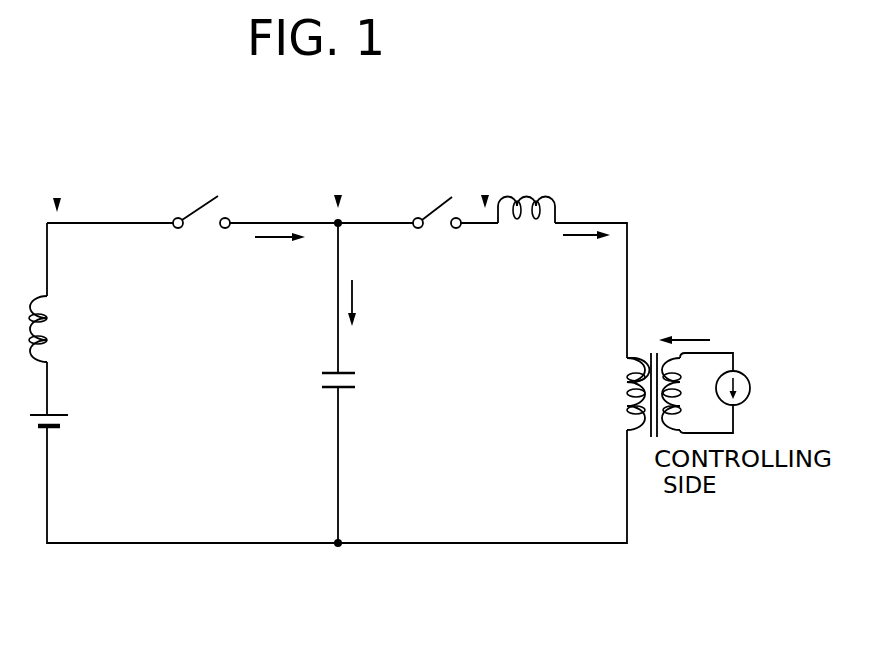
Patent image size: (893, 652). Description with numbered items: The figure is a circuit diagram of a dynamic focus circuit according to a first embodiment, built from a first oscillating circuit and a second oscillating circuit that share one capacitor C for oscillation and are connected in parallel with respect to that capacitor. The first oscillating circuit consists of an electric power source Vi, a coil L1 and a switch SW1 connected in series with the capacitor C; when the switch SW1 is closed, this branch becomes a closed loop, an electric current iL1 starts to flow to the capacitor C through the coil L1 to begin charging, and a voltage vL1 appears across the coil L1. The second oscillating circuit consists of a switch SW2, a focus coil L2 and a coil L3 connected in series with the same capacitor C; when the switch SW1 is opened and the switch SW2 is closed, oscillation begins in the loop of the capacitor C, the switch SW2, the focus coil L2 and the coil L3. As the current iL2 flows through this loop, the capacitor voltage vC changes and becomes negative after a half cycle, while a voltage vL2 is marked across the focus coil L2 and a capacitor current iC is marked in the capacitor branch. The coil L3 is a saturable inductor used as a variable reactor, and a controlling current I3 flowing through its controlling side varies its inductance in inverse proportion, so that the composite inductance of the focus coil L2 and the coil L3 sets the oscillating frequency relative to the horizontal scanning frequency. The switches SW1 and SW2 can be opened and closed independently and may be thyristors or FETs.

The coil L1 is at (58, 329).
The electric power source Vi is at (65, 422).
The switch SW1 is at (199, 232).
The switch SW2 is at (432, 232).
The capacitor C is at (351, 382).
The focus coil L2 is at (526, 226).
The coil L3 is at (668, 395).
The controlling current I3 is at (684, 322).
The electric current iL1 is at (280, 255).
The current iL2 is at (586, 252).
The capacitor current iC is at (364, 303).
The voltage vL1 is at (54, 183).
The voltage vC is at (331, 181).
The voltage across second inductor vL2 is at (475, 181).